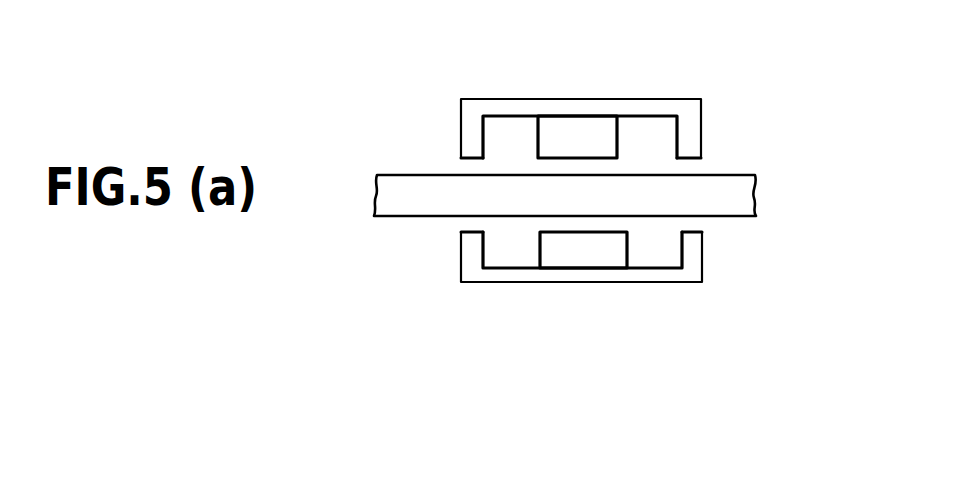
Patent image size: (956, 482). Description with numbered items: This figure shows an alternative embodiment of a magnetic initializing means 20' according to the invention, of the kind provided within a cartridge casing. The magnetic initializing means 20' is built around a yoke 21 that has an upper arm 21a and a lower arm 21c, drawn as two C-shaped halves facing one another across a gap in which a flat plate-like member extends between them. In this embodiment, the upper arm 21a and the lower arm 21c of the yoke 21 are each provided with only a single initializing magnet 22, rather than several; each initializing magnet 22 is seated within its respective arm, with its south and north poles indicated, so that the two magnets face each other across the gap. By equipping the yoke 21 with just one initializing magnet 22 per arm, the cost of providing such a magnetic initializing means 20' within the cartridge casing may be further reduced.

The magnetic initializing means 20' is at (603, 82).
The yoke 21 is at (575, 82).
The upper arm 21a is at (503, 108).
The lower arm 21c is at (512, 273).
The initializing magnet 22 is at (605, 122).